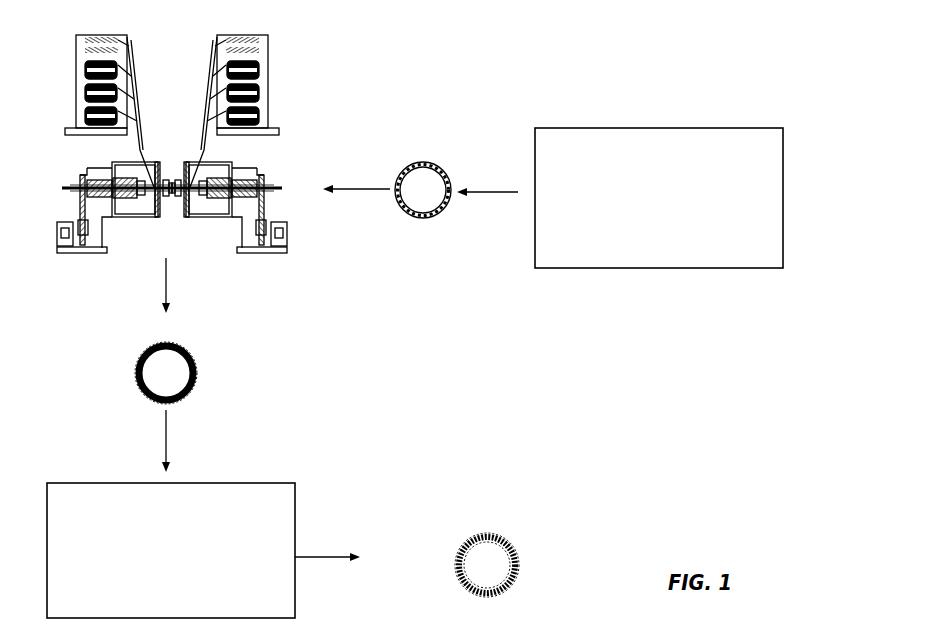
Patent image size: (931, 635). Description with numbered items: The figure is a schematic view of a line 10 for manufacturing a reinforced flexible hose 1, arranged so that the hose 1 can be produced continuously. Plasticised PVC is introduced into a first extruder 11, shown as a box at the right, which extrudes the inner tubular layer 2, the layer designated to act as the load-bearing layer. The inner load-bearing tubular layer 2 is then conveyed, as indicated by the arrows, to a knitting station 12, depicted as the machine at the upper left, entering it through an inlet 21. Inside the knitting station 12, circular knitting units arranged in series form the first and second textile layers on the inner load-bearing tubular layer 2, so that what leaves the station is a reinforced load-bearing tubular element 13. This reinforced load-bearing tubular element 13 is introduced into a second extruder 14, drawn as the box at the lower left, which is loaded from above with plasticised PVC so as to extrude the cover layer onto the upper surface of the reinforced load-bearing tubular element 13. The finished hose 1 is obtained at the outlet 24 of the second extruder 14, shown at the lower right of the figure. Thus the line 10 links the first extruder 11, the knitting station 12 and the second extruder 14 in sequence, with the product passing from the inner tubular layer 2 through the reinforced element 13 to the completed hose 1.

The reinforced flexible hose 1 is at (483, 520).
The inner tubular layer 2 is at (423, 219).
The line 10 is at (533, 403).
The first extruder 11 is at (648, 260).
The knitting station 12 is at (306, 309).
The reinforced load-bearing tubular element 13 is at (129, 345).
The second extruder 14 is at (202, 570).
The inlet 21 is at (313, 150).
The outlet 24 is at (210, 422).